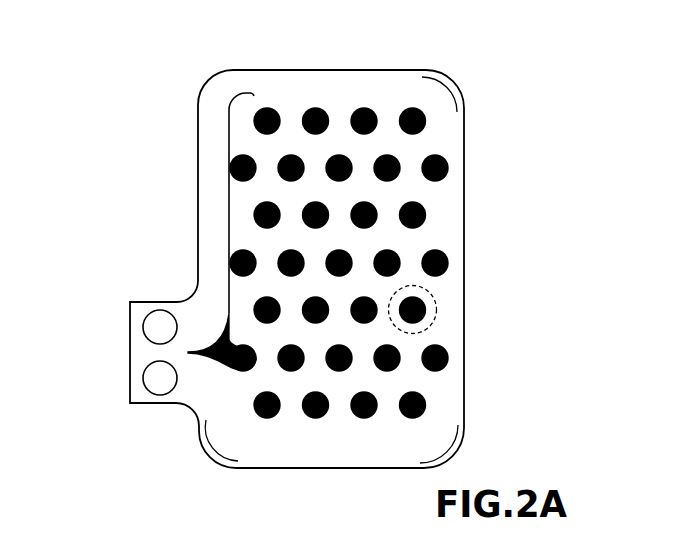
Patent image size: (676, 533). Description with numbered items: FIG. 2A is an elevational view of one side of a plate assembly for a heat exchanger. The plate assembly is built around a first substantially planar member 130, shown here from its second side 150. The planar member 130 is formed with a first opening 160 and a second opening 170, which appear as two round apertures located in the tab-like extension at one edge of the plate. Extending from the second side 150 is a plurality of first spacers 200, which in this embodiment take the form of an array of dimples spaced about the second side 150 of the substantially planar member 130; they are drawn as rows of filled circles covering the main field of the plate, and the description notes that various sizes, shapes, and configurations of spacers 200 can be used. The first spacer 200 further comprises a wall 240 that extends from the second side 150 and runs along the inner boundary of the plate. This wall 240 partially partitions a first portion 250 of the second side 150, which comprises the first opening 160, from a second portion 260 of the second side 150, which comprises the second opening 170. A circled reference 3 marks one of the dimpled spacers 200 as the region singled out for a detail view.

The first substantially planar member 130 is at (225, 70).
The second side 150 is at (338, 82).
The wall 240 is at (229, 143).
The first portion 250 is at (215, 197).
The second portion 260 is at (207, 405).
The first opening 160 is at (150, 327).
The second opening 170 is at (150, 379).
The first spacer 200 is at (282, 254).
The detail region shown in FIG. 3 is at (436, 303).